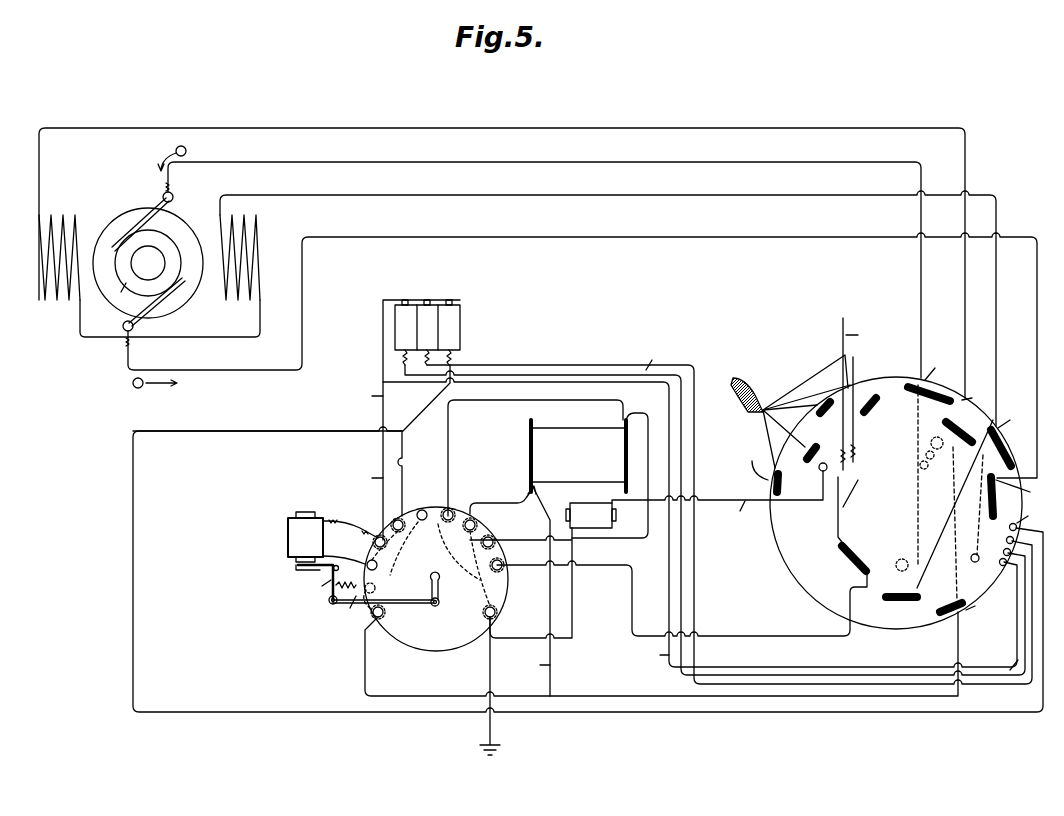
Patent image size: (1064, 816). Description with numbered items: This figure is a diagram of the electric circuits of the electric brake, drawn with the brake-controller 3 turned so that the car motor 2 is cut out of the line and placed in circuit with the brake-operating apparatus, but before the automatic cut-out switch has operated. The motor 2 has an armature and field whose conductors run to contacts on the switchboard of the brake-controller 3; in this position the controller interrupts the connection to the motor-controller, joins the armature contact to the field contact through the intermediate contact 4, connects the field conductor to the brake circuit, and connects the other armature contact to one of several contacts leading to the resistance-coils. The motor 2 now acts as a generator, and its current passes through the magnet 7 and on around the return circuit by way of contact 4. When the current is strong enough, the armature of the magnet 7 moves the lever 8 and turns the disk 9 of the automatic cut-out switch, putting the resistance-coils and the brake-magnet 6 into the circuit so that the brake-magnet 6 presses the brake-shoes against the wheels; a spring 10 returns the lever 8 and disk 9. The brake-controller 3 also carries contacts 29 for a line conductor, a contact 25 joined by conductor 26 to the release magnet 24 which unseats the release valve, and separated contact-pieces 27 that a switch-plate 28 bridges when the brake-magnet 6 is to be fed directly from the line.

The motor 2 is at (147, 264).
The brake-controller 3 is at (896, 503).
The intermediate contact 4 is at (939, 521).
The brake-magnet 6 is at (578, 456).
The magnet 7 is at (333, 538).
The lever 8 is at (326, 584).
The disk 9 is at (436, 579).
The spring 10 is at (383, 611).
The release magnet 24 is at (607, 475).
The contact 25 is at (812, 479).
The conductor 26 is at (717, 501).
The contact-pieces 27 is at (839, 553).
The switch-plate 28 is at (895, 485).
The contacts 29 is at (905, 453).